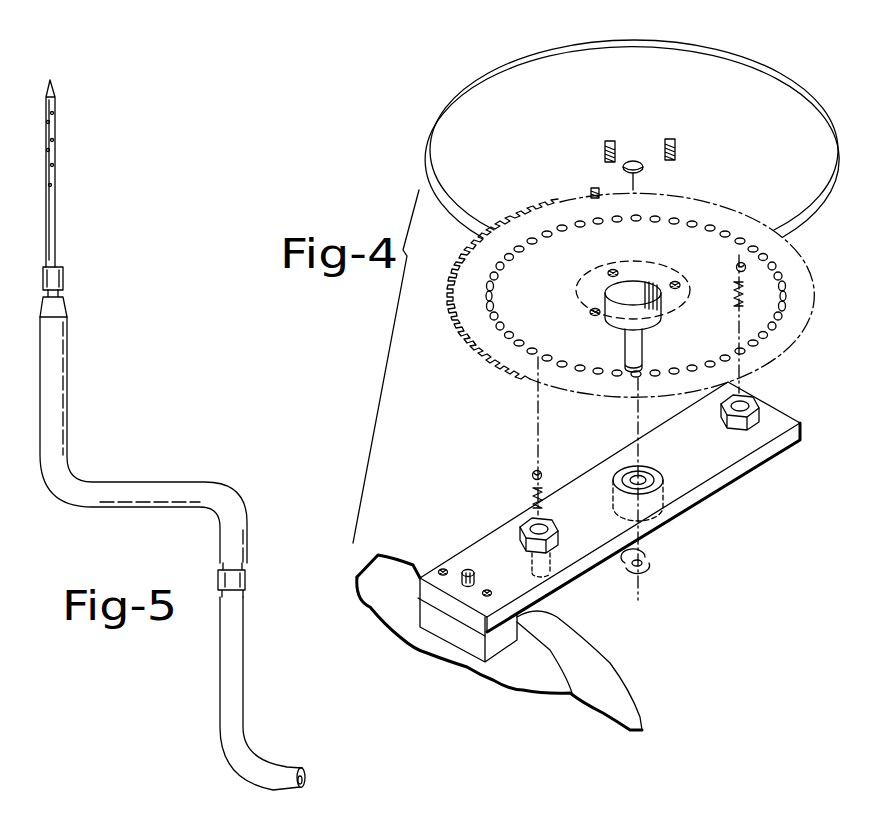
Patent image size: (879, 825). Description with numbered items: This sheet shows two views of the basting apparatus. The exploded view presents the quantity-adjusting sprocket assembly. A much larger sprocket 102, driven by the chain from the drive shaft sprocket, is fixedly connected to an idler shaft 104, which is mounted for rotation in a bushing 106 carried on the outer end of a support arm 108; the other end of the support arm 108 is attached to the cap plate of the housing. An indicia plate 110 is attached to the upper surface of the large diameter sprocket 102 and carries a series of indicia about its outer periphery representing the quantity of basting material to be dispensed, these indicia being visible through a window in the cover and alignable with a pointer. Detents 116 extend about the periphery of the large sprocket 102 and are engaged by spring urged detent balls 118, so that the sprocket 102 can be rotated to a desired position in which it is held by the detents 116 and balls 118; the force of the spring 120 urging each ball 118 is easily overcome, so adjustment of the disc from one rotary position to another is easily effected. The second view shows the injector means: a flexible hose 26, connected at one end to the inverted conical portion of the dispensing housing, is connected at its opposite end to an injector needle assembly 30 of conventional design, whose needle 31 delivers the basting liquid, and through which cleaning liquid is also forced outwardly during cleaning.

In FIG. 4, the indicia plate 110 is at (743, 63).
In FIG. 4, the large sprocket 102 is at (755, 353).
In FIG. 4, the idler shaft 104 is at (643, 340).
In FIG. 4, the detents 116 is at (491, 283).
In FIG. 4, the detent balls 118 is at (739, 266).
In FIG. 4, the spring 120 is at (733, 303).
In FIG. 4, the bushing 106 is at (665, 497).
In FIG. 4, the support arm 108 is at (567, 577).
In FIG. 5, the needle 31 is at (53, 172).
In FIG. 5, the injector needle assembly 30 is at (132, 487).
In FIG. 5, the flexible hose 26 is at (262, 760).